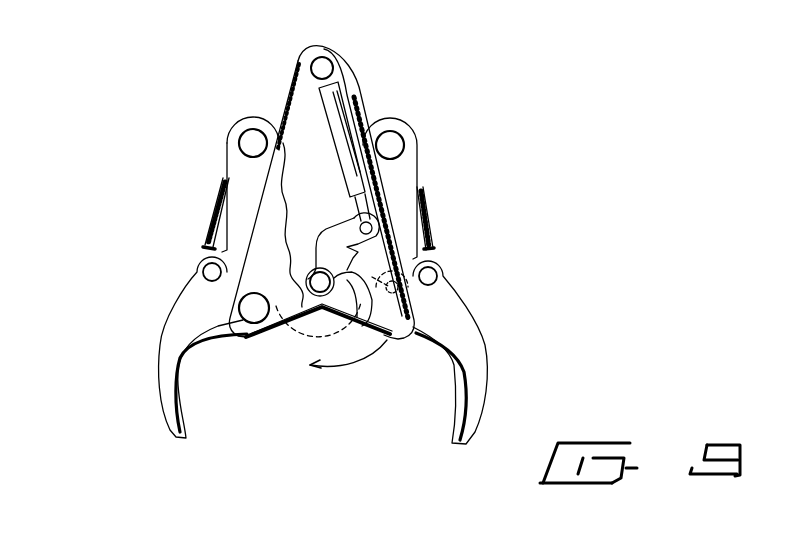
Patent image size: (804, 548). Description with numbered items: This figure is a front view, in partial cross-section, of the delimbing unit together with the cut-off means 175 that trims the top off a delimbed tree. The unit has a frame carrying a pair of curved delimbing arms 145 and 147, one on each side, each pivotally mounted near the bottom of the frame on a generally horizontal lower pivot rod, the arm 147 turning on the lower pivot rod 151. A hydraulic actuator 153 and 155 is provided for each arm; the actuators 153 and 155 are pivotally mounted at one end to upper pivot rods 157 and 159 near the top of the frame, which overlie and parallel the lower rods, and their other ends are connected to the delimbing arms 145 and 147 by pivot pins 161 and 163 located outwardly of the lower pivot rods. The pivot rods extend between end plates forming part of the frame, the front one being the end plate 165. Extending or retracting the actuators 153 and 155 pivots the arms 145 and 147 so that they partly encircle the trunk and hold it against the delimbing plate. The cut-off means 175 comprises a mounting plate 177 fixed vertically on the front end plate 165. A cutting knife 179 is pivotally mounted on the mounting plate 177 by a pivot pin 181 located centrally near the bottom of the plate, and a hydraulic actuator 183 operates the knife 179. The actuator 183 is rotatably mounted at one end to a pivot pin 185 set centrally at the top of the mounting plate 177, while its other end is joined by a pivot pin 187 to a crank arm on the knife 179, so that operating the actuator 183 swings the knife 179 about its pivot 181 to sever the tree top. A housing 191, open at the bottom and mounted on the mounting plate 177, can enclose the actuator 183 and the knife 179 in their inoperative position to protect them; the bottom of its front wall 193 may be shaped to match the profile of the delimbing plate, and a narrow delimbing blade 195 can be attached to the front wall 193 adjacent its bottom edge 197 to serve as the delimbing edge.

The delimbing arm 145 is at (487, 350).
The delimbing arm 147 is at (158, 370).
The lower pivot rod 151 is at (245, 332).
The hydraulic actuator 153 is at (436, 240).
The hydraulic actuator 155 is at (211, 222).
The upper pivot rod 157 is at (394, 133).
The upper pivot rod 159 is at (246, 128).
The pivot pin 161 is at (441, 278).
The pivot pin 163 is at (203, 270).
The end plate 165 is at (240, 169).
The cut-off means 175 is at (460, 155).
The mounting plate 177 is at (309, 109).
The cutting knife 179 is at (397, 338).
The pivot pin 181 is at (321, 298).
The hydraulic actuator 183 is at (346, 101).
The pivot pin 185 is at (333, 48).
The pivot pin 187 is at (378, 225).
The housing 191 is at (247, 232).
The front wall 193 is at (260, 283).
The delimbing blade 195 is at (281, 330).
The bottom edge 197 is at (249, 340).